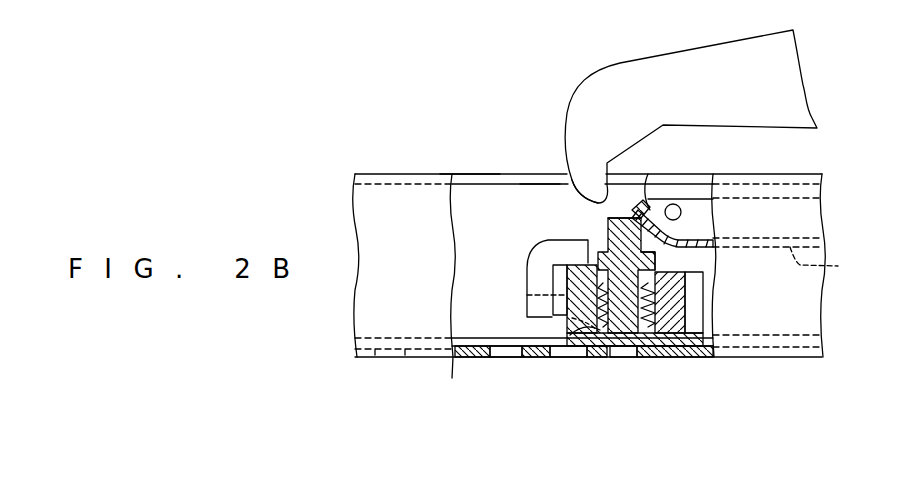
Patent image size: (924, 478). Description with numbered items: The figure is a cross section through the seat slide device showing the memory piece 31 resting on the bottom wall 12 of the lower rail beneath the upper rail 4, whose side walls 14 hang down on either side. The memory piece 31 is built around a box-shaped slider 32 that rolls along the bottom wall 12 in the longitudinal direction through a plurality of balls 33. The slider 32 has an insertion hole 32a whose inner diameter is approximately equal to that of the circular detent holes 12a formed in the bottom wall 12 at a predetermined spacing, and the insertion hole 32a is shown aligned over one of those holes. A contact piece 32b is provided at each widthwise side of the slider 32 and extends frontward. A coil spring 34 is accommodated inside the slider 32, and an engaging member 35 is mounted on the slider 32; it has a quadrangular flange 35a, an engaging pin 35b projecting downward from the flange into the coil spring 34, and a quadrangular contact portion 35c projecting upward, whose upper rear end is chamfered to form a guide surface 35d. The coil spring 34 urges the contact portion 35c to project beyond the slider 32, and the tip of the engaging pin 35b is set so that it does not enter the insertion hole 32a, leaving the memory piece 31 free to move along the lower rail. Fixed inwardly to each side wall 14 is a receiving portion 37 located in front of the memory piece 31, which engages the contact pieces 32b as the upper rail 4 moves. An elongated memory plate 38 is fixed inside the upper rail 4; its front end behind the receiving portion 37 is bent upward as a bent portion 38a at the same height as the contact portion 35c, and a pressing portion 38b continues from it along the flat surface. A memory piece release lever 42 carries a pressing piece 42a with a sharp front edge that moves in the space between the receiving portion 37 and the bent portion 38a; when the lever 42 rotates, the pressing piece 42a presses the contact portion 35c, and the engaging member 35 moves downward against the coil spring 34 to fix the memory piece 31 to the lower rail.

The upper rail 4 is at (457, 174).
The bottom wall 12 is at (452, 378).
The detent holes 12a is at (588, 357).
The side walls 14 is at (452, 266).
The memory piece 31 is at (539, 191).
The slider 32 is at (706, 350).
The insertion hole 32a is at (639, 357).
The contact piece 32b is at (552, 316).
The balls 33 is at (681, 357).
The coil spring 34 is at (687, 300).
The engaging member 35 is at (587, 258).
The quadrangular flange 35a is at (657, 258).
The engaging pin 35b is at (563, 357).
The contact portion 35c is at (607, 229).
The guide surface 35d is at (647, 204).
The receiving portion 37 is at (527, 284).
The memory plate 38 is at (692, 197).
The bent portion 38a is at (703, 223).
The pressing portion 38b is at (841, 265).
The memory piece release lever 42 is at (642, 60).
The pressing piece 42a is at (573, 186).